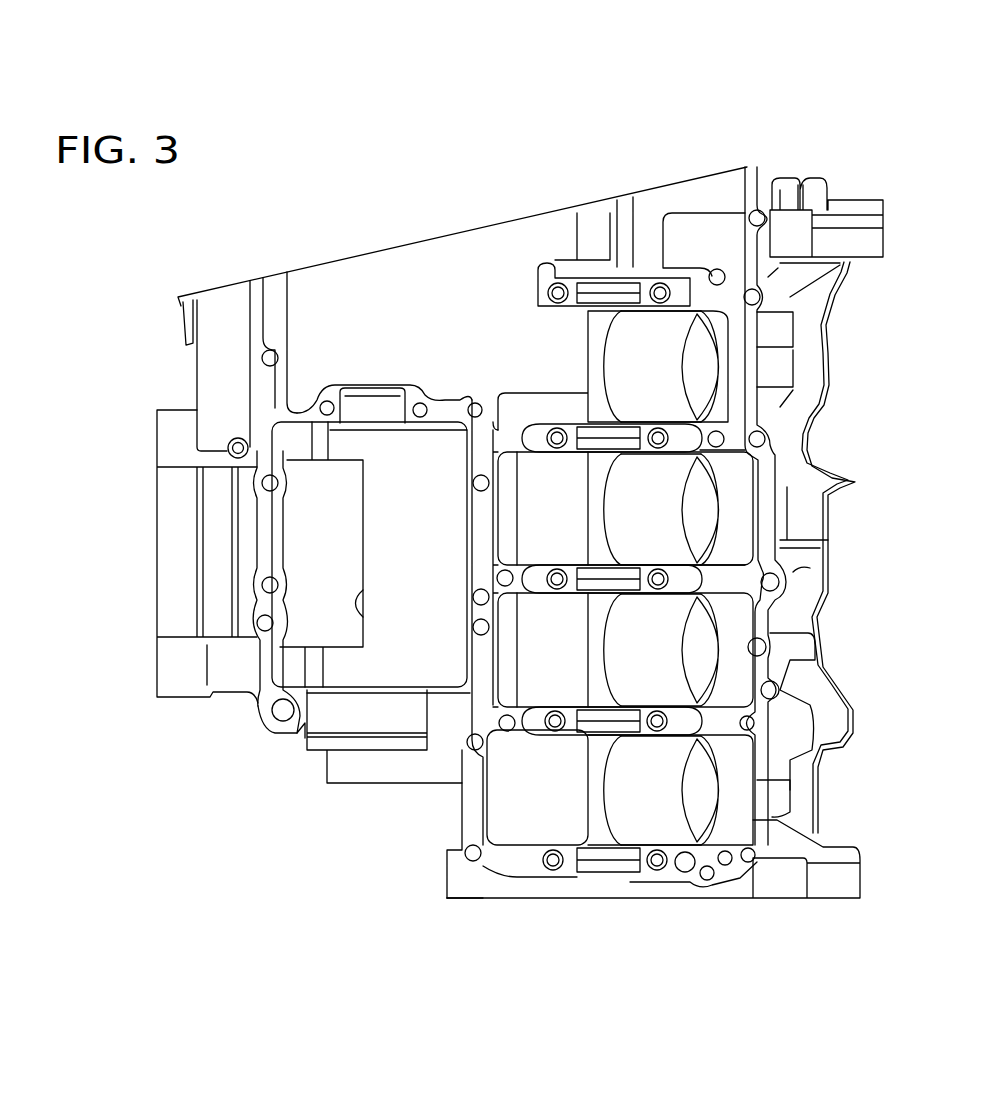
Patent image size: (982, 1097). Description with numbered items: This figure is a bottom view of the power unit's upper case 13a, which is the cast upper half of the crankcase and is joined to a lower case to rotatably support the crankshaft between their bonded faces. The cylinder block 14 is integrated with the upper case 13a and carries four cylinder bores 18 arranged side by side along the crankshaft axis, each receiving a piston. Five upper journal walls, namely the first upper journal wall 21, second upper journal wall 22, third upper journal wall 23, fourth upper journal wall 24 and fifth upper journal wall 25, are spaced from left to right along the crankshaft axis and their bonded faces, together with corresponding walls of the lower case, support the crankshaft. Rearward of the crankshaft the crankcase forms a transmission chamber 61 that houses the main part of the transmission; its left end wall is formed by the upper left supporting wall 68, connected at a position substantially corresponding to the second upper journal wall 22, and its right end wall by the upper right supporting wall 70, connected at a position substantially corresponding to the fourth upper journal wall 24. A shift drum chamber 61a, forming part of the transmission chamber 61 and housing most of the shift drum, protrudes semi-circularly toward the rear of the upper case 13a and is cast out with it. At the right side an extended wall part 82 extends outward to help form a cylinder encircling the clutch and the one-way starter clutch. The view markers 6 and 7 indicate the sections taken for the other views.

The upper case 13a is at (462, 783).
The cylinder block 14 is at (783, 510).
The cylinder bore 18 is at (643, 808).
The first upper journal wall 21 is at (520, 853).
The second upper journal wall 22 is at (538, 732).
The third upper journal wall 23 is at (542, 582).
The fourth upper journal wall 24 is at (547, 427).
The fifth upper journal wall 25 is at (538, 269).
The transmission chamber 61 is at (438, 562).
The shift drum chamber 61a is at (362, 607).
The upper left supporting wall 68 is at (292, 728).
The upper right supporting wall 70 is at (296, 413).
The extended wall part 82 is at (753, 192).
The section view direction 6 is at (483, 145).
The section line 7- 7 is at (145, 488).